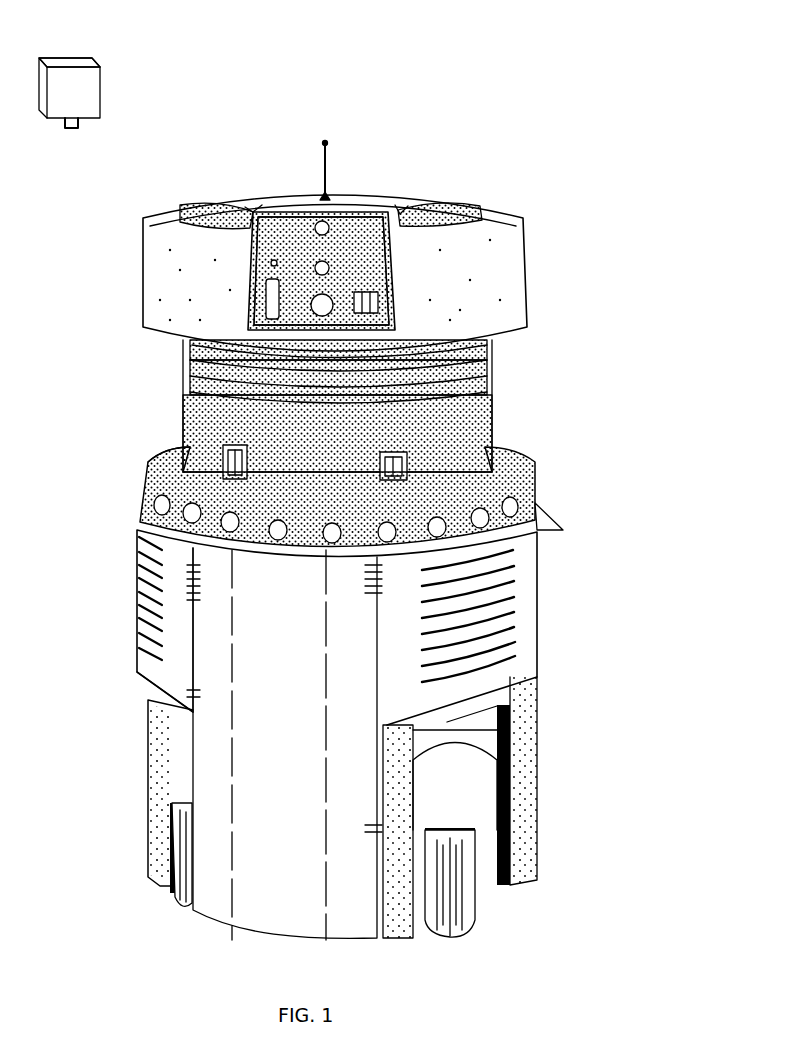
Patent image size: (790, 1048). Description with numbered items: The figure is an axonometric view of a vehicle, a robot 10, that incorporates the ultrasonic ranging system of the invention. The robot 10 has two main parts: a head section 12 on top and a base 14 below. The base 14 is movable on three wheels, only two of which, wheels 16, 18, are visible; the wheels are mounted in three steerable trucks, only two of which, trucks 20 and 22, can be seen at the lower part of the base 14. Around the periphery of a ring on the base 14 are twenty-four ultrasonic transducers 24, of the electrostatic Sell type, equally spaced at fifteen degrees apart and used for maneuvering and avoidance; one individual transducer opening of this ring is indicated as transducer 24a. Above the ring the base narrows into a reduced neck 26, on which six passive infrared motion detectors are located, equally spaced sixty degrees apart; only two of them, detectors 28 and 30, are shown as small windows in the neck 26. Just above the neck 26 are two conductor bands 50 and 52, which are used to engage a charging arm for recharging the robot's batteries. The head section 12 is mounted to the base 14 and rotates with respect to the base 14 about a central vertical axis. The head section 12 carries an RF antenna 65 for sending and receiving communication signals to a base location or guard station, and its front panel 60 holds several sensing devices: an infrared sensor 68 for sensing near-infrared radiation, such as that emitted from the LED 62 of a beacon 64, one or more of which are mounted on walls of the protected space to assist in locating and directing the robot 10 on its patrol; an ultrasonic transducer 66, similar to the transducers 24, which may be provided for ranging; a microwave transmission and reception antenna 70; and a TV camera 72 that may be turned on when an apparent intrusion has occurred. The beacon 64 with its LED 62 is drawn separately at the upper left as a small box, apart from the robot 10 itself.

The robot 10 is at (658, 110).
The head section 12 is at (527, 240).
The base 14 is at (545, 627).
The wheel 16 is at (175, 890).
The wheel 18 is at (470, 932).
The steerable truck 20 is at (148, 780).
The steerable truck 22 is at (470, 798).
The ultrasonic transducers 24 is at (540, 525).
The collar port 24a is at (150, 520).
The reduced neck 26 is at (495, 437).
The passive infrared motion detector 28 is at (182, 447).
The passive infrared motion detector 30 is at (500, 466).
The conductor band 50 is at (490, 380).
The conductor band 52 is at (488, 346).
The control panel 60 is at (330, 222).
The LED 62 is at (92, 120).
The beacon 64 is at (73, 65).
The RF antenna 65 is at (330, 158).
The ultrasonic transducer 66 is at (315, 297).
The infrared sensor 68 is at (380, 302).
The microwave transmission and reception antenna 70 is at (265, 305).
The TV camera 72 is at (353, 292).